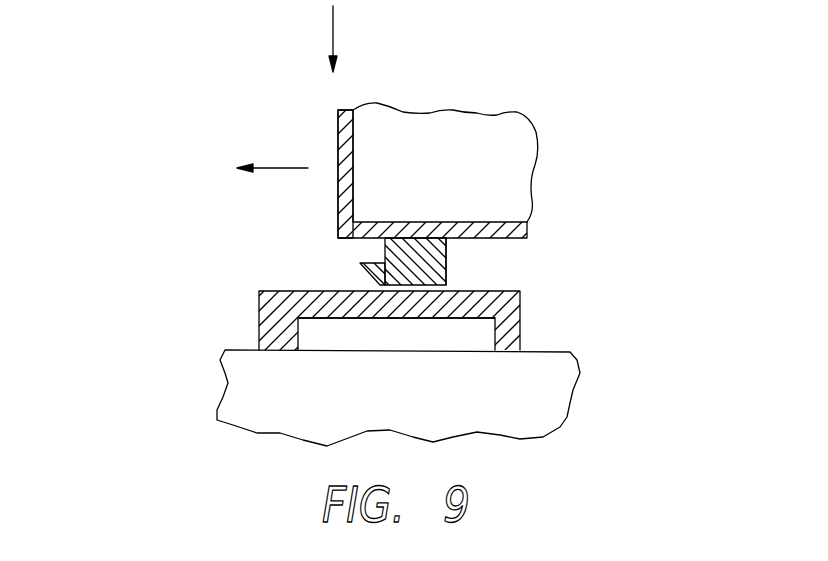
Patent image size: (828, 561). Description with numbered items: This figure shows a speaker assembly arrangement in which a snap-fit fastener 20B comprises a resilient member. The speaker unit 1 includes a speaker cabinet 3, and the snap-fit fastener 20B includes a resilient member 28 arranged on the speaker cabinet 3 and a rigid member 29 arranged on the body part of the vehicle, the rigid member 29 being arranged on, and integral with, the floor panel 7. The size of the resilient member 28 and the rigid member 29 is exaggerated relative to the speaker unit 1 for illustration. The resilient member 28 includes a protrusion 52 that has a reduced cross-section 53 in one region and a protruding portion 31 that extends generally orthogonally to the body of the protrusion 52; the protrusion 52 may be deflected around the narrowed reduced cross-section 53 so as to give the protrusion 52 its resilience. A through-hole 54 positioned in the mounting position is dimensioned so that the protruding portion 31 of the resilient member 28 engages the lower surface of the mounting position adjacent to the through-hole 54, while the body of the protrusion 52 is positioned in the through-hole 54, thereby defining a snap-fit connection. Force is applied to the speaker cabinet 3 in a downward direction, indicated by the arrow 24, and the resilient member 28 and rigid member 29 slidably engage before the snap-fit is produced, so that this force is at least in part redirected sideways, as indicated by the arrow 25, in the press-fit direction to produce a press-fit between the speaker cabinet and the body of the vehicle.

The speaker unit 1 is at (518, 115).
The speaker cabinet 3 is at (337, 178).
The floor panel 7 is at (570, 403).
The snap-fit fastener 20B is at (192, 223).
The arrow indicating downward force 24 is at (332, 23).
The arrow indicating sideways direction 25 is at (290, 165).
The resilient member 28 is at (447, 267).
The rigid member 29 is at (259, 320).
The protruding portion 31 is at (372, 278).
The protrusion 52 is at (405, 255).
The reduced cross-section 53 is at (387, 249).
The through-hole 54 is at (445, 308).